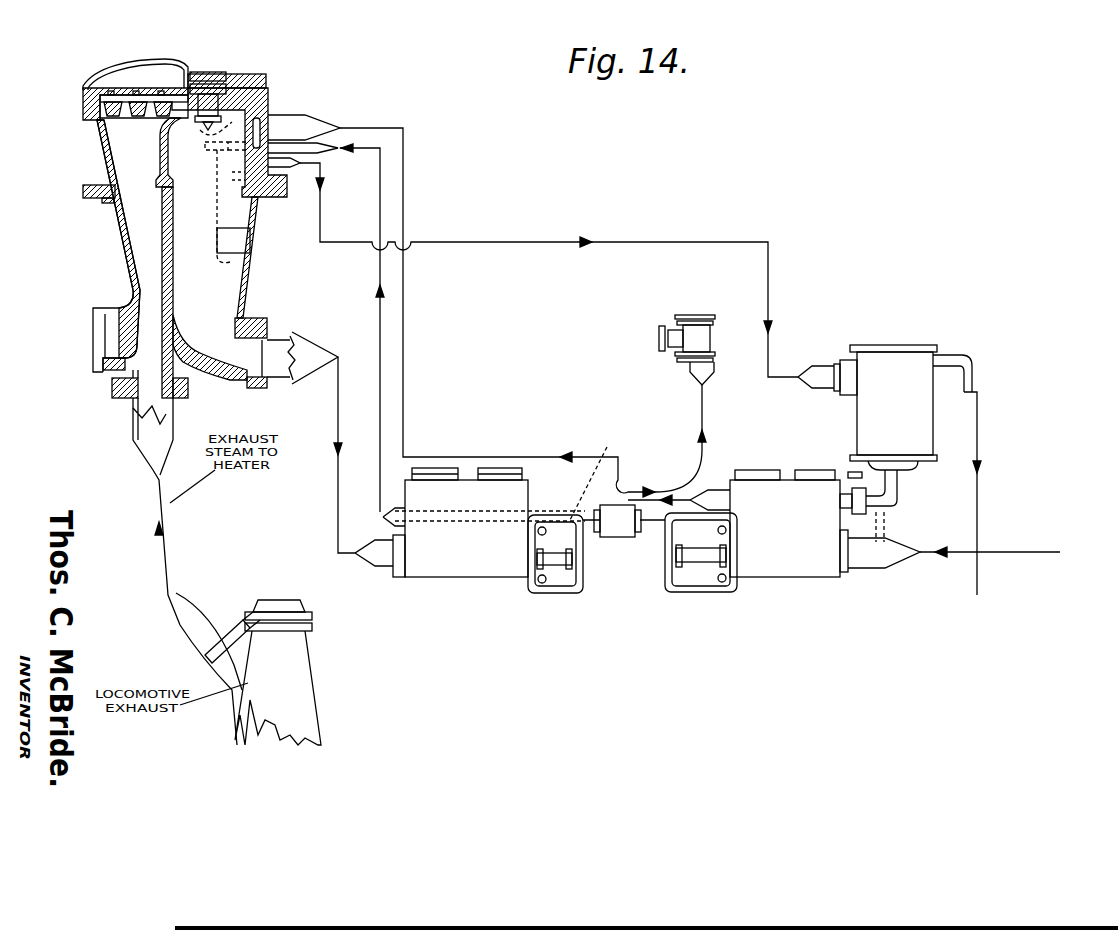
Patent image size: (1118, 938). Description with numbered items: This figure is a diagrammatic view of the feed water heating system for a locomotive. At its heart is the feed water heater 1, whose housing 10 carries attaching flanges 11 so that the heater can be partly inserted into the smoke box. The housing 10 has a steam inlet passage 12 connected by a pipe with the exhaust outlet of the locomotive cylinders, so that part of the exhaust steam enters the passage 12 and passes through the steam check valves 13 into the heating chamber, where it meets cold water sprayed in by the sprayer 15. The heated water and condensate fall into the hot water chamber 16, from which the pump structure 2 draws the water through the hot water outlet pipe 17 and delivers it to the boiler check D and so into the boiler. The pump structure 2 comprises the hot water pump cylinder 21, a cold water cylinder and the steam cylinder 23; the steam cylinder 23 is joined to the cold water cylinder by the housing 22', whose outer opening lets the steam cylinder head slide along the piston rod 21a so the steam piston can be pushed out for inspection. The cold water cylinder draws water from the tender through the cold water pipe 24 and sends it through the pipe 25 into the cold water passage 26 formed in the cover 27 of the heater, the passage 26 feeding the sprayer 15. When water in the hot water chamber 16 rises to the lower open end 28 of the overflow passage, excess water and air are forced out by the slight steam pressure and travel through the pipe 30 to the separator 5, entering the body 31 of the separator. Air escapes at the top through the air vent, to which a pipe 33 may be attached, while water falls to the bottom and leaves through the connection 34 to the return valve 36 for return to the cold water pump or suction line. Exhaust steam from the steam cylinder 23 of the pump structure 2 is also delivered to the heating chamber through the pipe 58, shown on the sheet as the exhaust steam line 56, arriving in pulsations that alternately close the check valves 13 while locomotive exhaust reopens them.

The feed water heater 1 is at (97, 150).
The pump structure 2 is at (604, 585).
The separator 5 is at (876, 409).
The housing 10 is at (255, 215).
The attaching flanges 11 is at (96, 185).
The steam inlet passage 12 is at (130, 240).
The steam check valves 13 is at (105, 118).
The sprayer 15 is at (256, 96).
The hot water chamber 16 is at (705, 399).
The hot water outlet pipe 17 is at (298, 366).
The hot water pump cylinder 21 is at (490, 570).
The piston rod 21a is at (820, 560).
The housing 22' is at (701, 568).
The steam cylinder 23 is at (640, 568).
The cold water pipe 24 is at (968, 555).
The pipe 25 is at (292, 127).
The cold water passage 26 is at (210, 94).
The cover 27 is at (178, 67).
The lower open end 28 is at (240, 245).
The pipe 30 is at (278, 168).
The body 31 is at (912, 428).
The pipe 33 is at (978, 398).
The connection 34 is at (897, 478).
The return valve 36 is at (868, 500).
The exhaust steam pipe from pump to heater 56 is at (340, 130).
The pipe 58 is at (593, 474).
The boiler check D is at (628, 372).